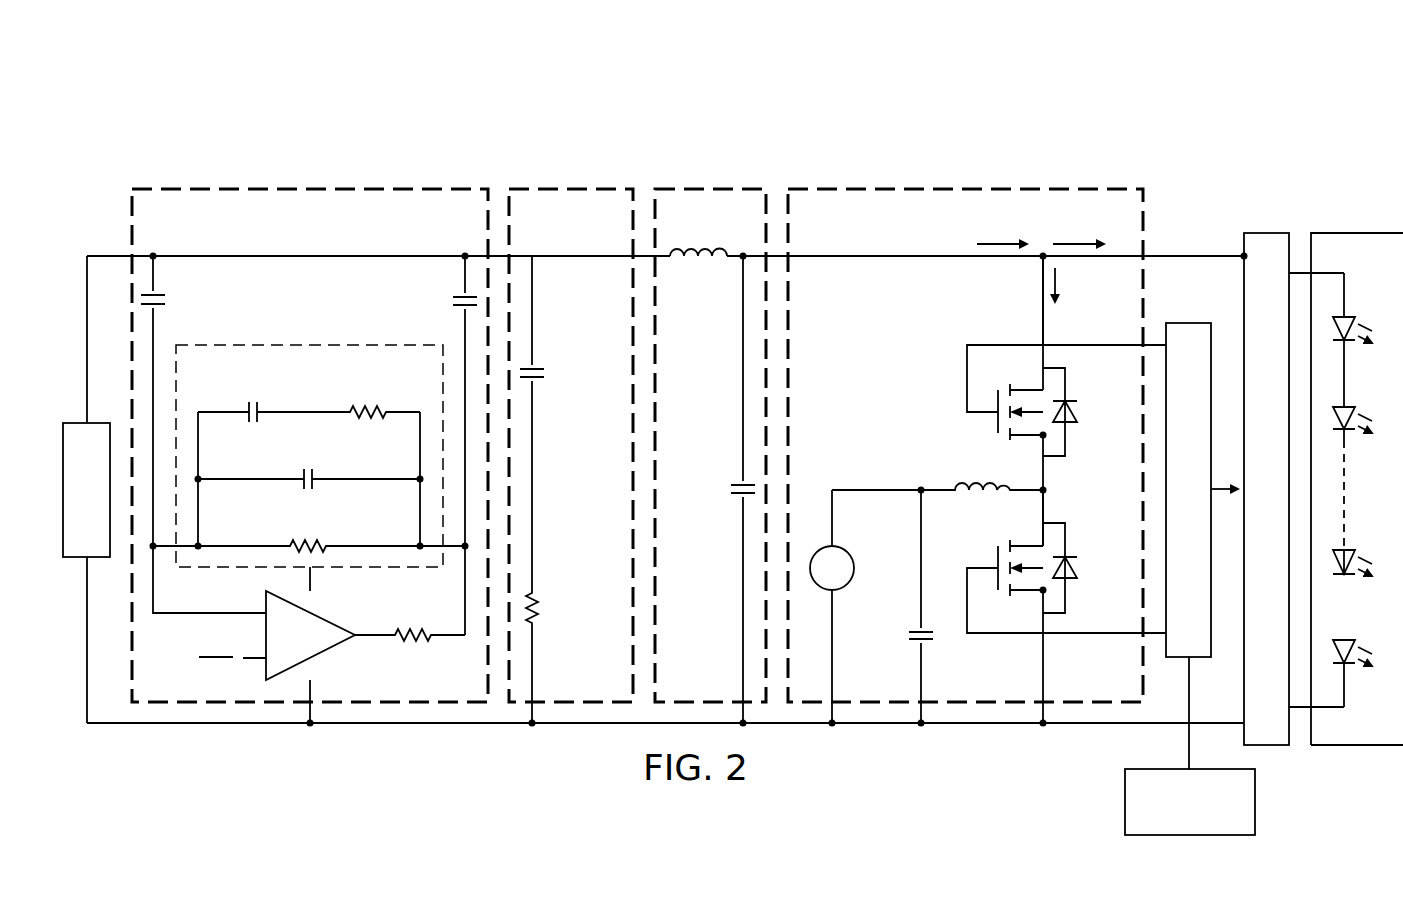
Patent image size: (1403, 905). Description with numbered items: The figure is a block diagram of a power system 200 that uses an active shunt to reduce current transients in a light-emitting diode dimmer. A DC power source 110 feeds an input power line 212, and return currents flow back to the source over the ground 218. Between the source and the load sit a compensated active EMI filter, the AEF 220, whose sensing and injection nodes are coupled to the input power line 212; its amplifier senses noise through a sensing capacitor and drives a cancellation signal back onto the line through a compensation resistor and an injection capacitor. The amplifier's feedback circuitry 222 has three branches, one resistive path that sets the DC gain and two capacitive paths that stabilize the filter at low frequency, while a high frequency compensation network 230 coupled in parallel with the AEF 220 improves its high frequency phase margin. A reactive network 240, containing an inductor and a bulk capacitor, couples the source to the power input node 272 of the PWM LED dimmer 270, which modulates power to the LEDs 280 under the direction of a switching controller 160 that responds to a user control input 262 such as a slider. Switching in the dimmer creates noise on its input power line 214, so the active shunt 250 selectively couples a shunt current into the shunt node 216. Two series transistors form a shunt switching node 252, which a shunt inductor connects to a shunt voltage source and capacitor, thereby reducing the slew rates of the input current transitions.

The power system 200 is at (576, 97).
The DC power source 110 is at (72, 422).
The input power line 212 is at (217, 255).
The input power line of the PWM LED dimmer 214 is at (843, 255).
The shunt node 216 is at (1040, 258).
The ground 218 is at (188, 725).
The active EMI filter 220 is at (265, 182).
The feedback circuitry 222 is at (281, 340).
The high frequency compensation network 230 is at (541, 182).
The reactive network 240 is at (704, 182).
The active shunt 250 is at (921, 182).
The shunt switching node 252 is at (1050, 488).
The switching controller 160 is at (1190, 322).
The control input 262 is at (1256, 800).
The PWM LED dimmer 270 is at (1267, 232).
The power input node 272 is at (1243, 255).
The LEDs 280 is at (1360, 232).